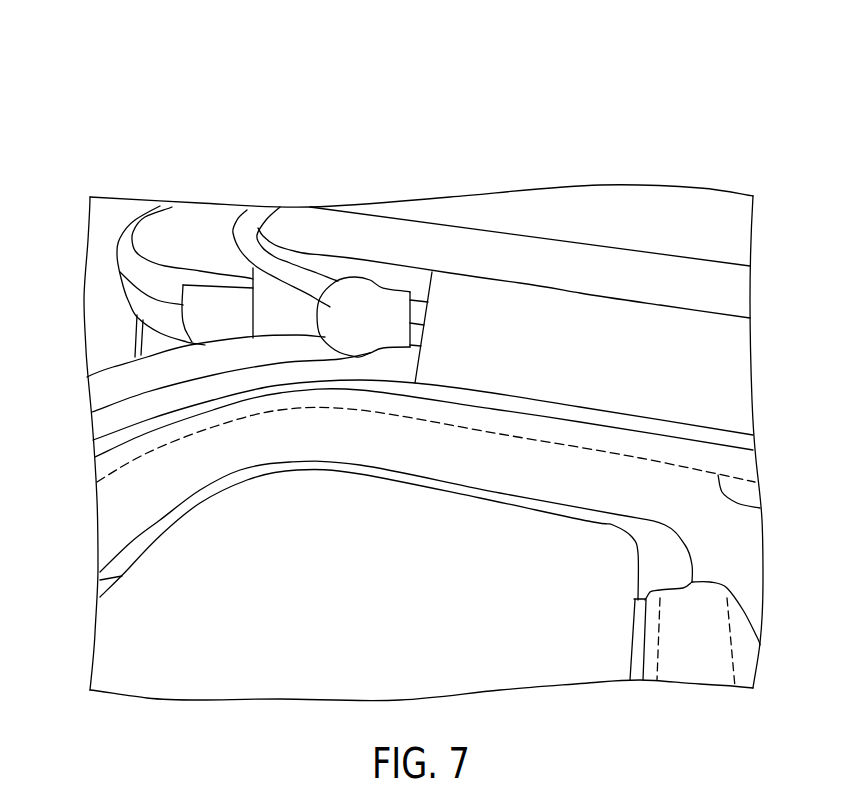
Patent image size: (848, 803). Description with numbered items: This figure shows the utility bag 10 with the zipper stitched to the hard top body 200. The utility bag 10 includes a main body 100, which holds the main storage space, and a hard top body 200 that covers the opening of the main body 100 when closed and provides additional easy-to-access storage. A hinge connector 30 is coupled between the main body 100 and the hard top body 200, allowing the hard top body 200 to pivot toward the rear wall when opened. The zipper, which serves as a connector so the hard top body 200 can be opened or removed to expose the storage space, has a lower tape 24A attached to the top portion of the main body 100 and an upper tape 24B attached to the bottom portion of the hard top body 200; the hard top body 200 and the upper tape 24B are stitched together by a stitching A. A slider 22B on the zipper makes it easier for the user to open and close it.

The utility bag 10 is at (65, 68).
The hinge connector 30 is at (543, 317).
The main body 100 is at (188, 242).
The lower tape 24A is at (352, 265).
The slider 22B is at (338, 297).
The upper tape 24B is at (105, 420).
The hard top body 200 is at (120, 615).
The stitching A is at (760, 508).